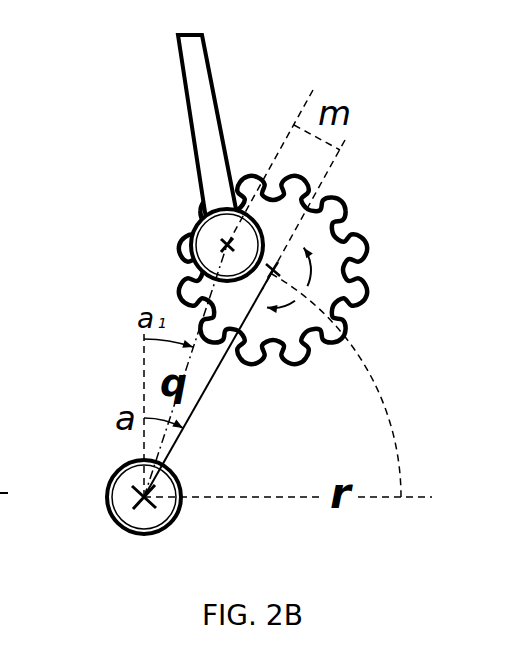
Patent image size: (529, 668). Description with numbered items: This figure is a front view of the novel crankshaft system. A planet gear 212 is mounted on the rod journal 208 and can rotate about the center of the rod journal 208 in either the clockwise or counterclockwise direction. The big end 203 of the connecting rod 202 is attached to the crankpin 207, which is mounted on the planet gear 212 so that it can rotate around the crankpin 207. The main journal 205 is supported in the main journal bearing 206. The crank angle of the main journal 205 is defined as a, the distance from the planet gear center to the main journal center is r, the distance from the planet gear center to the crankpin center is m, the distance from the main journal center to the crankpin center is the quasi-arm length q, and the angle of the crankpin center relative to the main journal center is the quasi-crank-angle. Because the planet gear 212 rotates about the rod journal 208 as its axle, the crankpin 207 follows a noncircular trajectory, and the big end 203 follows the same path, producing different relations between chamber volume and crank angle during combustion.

The connecting rod 202 is at (195, 93).
The big end 203 is at (195, 217).
The main journal 205 is at (160, 488).
The main journal bearing 206 is at (177, 517).
The crankpin 207 is at (202, 255).
The rod journal 208 is at (273, 270).
The planet gear 212 is at (362, 300).